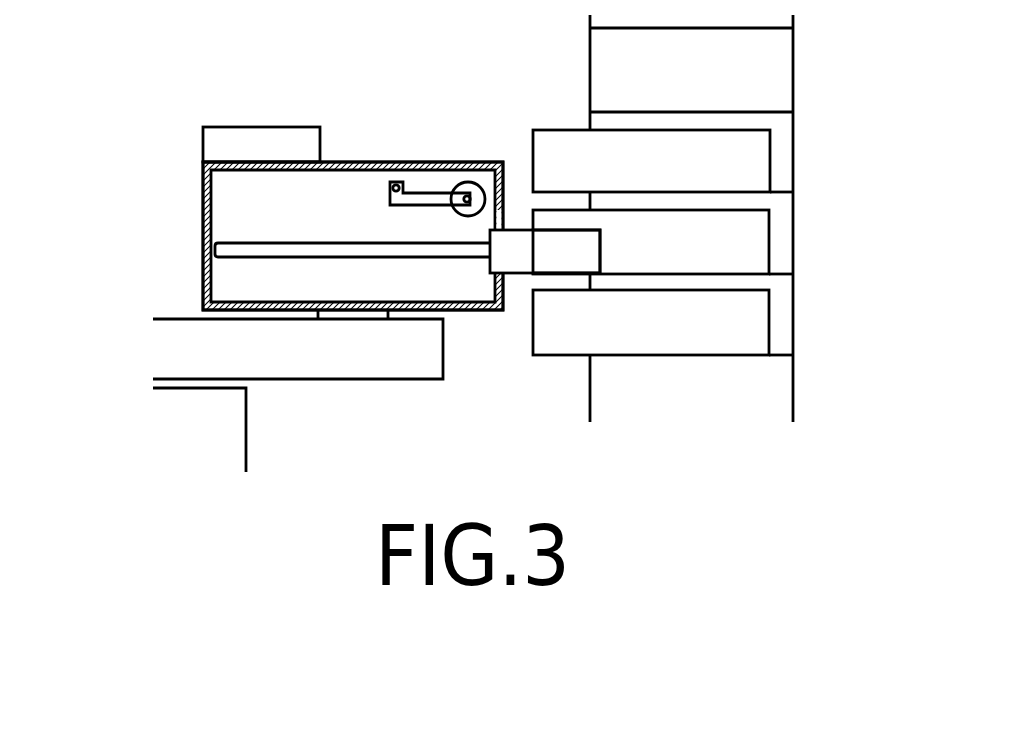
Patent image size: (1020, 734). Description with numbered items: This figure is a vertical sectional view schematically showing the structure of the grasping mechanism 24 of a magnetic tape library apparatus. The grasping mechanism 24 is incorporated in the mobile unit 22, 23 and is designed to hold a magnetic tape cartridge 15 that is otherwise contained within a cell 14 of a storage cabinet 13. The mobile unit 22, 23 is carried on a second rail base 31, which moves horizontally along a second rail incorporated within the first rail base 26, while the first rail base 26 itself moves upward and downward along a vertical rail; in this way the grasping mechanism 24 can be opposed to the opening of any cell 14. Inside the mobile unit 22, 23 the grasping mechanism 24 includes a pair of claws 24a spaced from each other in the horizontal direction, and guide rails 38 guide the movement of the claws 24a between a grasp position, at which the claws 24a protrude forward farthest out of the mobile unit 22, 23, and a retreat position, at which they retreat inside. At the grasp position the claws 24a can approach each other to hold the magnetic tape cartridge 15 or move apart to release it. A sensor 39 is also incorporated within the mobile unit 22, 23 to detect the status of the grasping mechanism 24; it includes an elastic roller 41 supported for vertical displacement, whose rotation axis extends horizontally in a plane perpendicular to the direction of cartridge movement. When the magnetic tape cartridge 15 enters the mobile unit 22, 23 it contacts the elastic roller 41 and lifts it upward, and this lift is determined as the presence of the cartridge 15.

The storage cabinet 13 is at (793, 82).
The cell 14 is at (601, 29).
The magnetic tape cartridge 15 is at (770, 172).
The mobile unit 22 is at (275, 218).
The mobile unit 23 is at (203, 196).
The grasping mechanism 24 is at (592, 239).
The claw 24a is at (601, 252).
The first rail base 26 is at (247, 397).
The second rail base 31 is at (383, 379).
The guide rail 38 is at (248, 243).
The sensor 39 is at (451, 180).
The elastic roller 41 is at (476, 181).